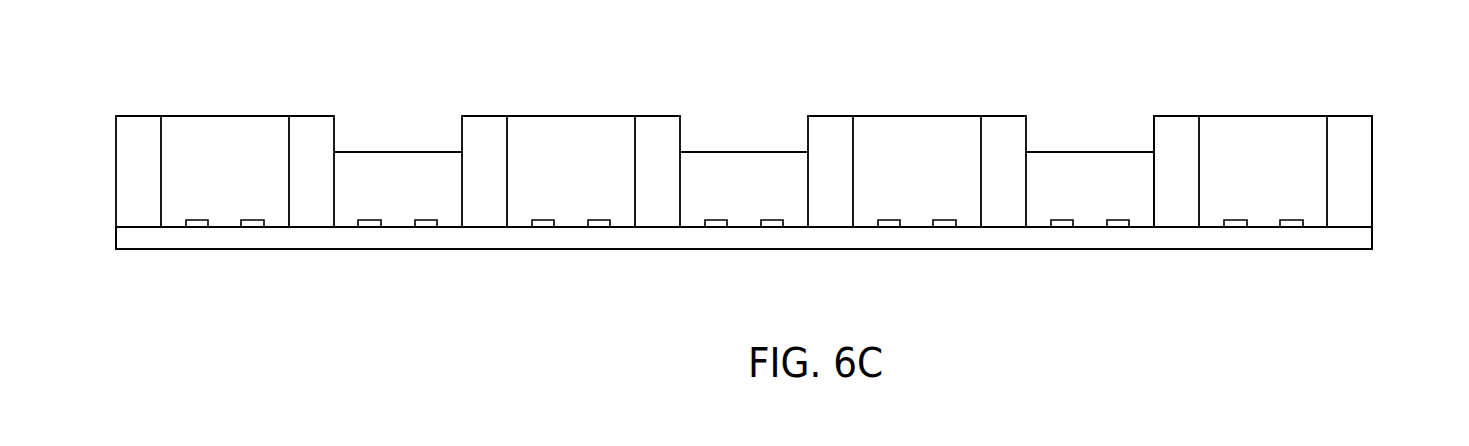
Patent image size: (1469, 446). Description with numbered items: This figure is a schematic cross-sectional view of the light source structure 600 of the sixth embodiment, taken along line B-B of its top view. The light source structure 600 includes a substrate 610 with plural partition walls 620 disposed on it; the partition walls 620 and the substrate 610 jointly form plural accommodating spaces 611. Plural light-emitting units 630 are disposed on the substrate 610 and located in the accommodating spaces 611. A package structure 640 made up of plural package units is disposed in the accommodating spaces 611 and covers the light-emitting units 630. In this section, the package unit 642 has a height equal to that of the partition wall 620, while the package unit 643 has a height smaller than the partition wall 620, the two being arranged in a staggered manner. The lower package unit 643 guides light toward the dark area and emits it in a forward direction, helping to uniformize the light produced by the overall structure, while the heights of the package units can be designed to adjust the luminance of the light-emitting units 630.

The light source structure 600 is at (144, 65).
The substrate 610 is at (250, 236).
The accommodating space 611 is at (392, 128).
The partition wall 620 is at (487, 213).
The light-emitting unit 630 is at (717, 225).
The package structure 640 is at (1298, 170).
The package unit 642 is at (1268, 203).
The package unit 643 is at (1093, 205).